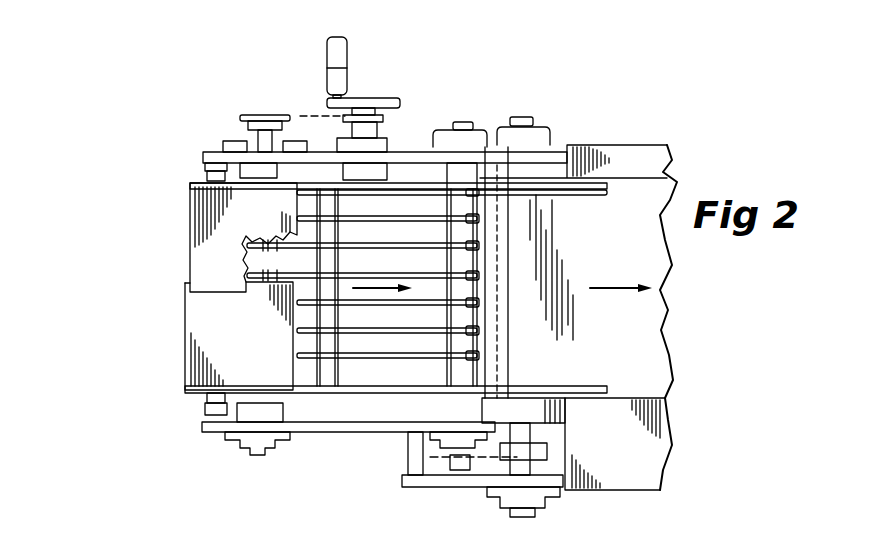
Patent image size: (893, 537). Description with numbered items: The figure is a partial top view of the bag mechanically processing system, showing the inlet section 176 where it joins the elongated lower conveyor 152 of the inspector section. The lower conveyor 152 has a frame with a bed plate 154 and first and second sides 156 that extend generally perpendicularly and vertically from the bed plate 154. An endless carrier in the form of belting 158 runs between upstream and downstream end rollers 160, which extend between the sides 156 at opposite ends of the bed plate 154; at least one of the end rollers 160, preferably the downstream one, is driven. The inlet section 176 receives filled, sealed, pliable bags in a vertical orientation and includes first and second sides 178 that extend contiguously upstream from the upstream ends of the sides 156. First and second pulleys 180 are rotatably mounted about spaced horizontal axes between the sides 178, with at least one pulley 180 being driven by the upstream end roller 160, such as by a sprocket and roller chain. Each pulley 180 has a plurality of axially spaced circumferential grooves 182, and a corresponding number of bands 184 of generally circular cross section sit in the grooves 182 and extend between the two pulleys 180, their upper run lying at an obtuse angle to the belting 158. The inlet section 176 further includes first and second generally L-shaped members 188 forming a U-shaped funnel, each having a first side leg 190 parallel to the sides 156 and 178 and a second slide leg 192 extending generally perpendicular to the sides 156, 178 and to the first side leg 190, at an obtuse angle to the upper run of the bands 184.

The lower conveyor 152 is at (677, 182).
The bed plate 154 is at (635, 150).
The sides 156 is at (440, 488).
The belting 158 is at (664, 327).
The end rollers 160 is at (547, 420).
The inlet section 176 is at (190, 157).
The sides 178 is at (347, 430).
The pulleys 180 is at (257, 257).
The circumferential grooves 182 is at (457, 383).
The bands 184 is at (477, 273).
The L-shaped members 188 is at (188, 225).
The first side leg 190 is at (200, 178).
The slide leg 192 is at (187, 287).